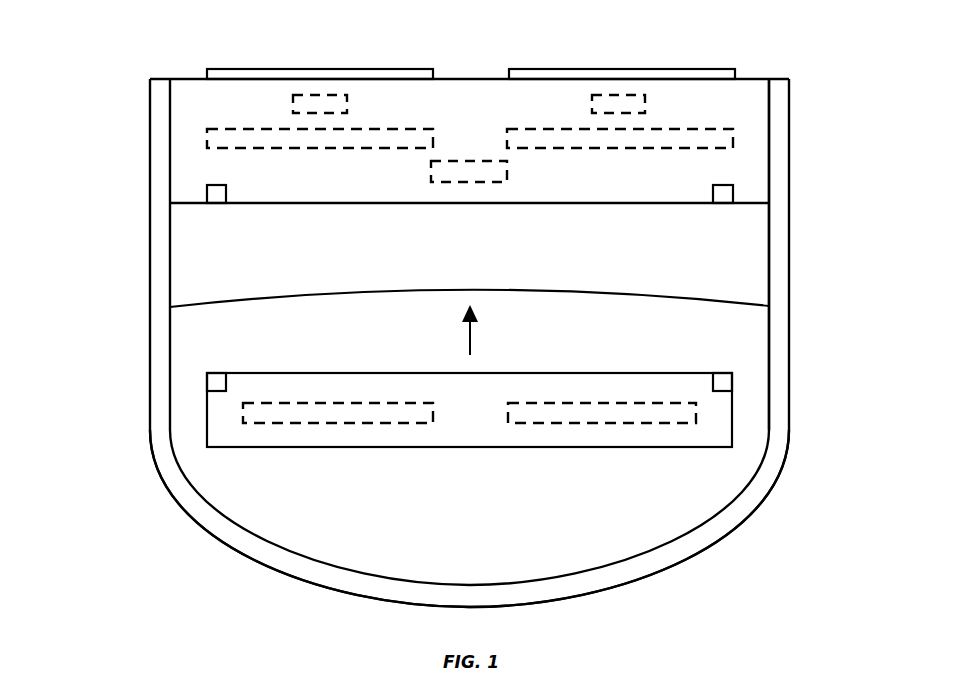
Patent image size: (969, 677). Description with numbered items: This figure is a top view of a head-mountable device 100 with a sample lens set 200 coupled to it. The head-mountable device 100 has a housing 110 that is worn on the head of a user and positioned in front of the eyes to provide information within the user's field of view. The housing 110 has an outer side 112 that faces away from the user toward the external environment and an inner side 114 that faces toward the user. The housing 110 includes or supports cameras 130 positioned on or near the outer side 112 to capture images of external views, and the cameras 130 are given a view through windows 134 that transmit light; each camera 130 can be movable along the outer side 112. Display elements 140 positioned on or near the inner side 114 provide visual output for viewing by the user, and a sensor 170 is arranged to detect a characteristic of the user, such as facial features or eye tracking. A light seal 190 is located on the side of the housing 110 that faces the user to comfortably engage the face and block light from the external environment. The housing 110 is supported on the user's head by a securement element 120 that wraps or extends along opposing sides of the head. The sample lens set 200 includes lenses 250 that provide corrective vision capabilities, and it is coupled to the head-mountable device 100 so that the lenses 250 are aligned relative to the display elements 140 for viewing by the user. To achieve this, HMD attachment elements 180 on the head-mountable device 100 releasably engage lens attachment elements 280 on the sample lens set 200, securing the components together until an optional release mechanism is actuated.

The head-mountable device 100 is at (106, 70).
The housing 110 is at (172, 79).
The outer side 112 is at (772, 79).
The inner side 114 is at (758, 205).
The securement element 120 is at (789, 440).
The camera 130 is at (310, 95).
The window 134 is at (419, 69).
The display element 140 is at (237, 129).
The sensor 170 is at (468, 161).
The HMD attachment element 180 is at (226, 199).
The light seal 190 is at (197, 251).
The sample lens set 200 is at (348, 372).
The lens 250 is at (353, 423).
The lens attachment element 280 is at (226, 382).